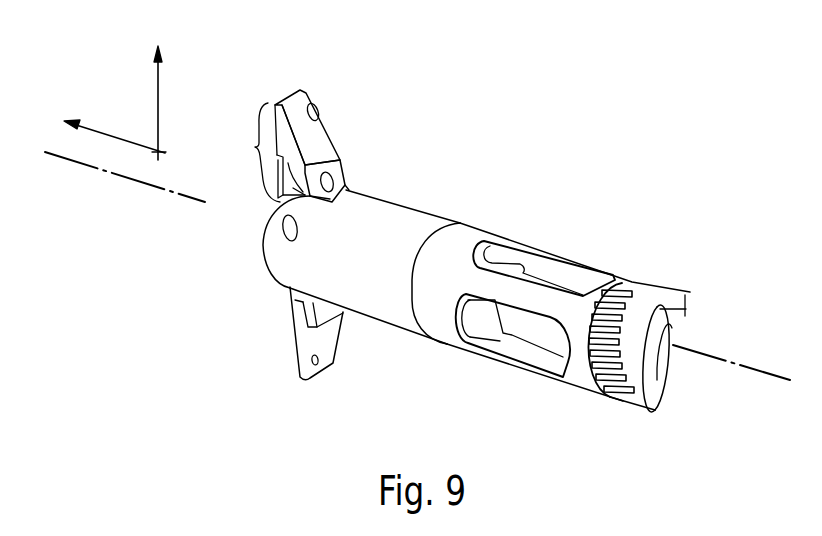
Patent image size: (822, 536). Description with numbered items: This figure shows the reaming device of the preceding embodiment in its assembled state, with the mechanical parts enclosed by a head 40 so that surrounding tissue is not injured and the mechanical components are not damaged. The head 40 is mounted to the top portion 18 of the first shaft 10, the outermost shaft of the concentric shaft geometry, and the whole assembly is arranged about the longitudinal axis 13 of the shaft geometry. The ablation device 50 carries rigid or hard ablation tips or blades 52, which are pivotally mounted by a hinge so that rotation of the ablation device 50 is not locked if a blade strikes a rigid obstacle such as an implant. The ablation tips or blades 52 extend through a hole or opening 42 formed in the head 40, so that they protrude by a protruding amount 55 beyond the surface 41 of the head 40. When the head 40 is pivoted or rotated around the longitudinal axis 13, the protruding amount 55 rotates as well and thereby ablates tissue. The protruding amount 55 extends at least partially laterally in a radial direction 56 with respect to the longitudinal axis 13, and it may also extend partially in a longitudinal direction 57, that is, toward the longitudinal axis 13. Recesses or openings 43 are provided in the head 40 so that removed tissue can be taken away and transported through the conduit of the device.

The first shaft 10 is at (662, 292).
The longitudinal axis 13 is at (67, 162).
The top portion 18 is at (628, 395).
The head 40 is at (435, 218).
The surface 41 is at (388, 220).
The hole or opening 42 is at (345, 185).
The recesses or openings 43 is at (563, 268).
The ablation device 50 is at (286, 351).
The ablation tips or blades 52 is at (308, 138).
The protruding amount 55 is at (266, 152).
The radial direction 56 is at (160, 83).
The longitudinal direction 57 is at (110, 135).